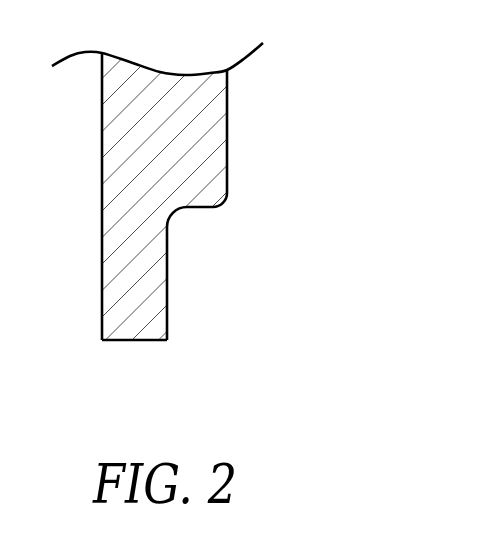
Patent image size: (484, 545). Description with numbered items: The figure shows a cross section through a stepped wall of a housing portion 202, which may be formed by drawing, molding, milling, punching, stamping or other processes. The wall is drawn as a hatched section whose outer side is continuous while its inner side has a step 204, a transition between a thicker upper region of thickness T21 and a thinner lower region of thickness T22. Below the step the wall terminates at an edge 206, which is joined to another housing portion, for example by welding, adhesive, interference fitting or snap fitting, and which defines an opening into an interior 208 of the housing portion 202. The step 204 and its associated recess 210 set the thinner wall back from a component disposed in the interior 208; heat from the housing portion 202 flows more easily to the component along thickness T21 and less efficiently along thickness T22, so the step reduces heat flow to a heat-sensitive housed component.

The housing portion 202 is at (110, 126).
The step 204 is at (198, 207).
The edge 206 is at (136, 340).
The interior 208 is at (340, 188).
The recess 210 is at (213, 355).
The thickness T21 is at (257, 68).
The thickness T22 is at (257, 212).